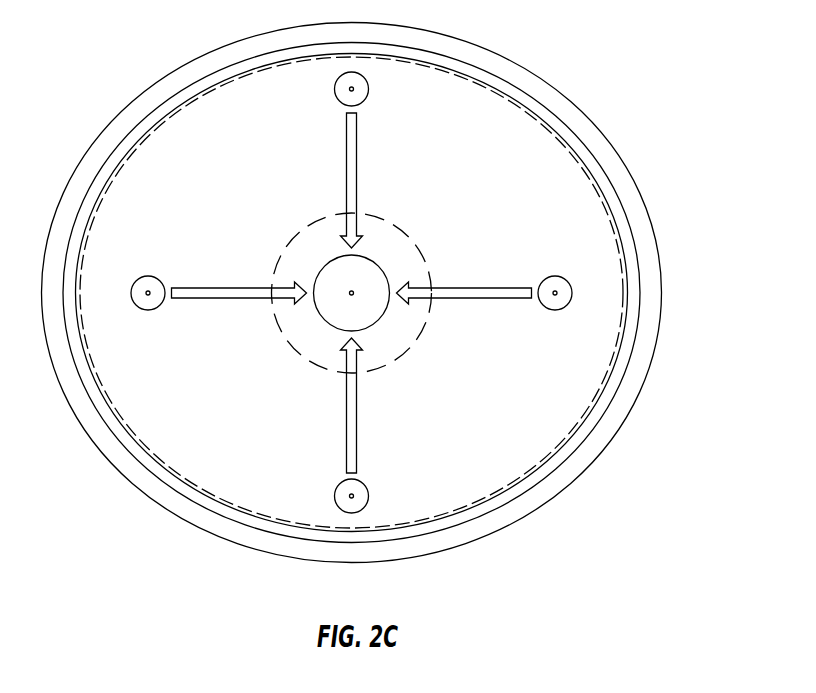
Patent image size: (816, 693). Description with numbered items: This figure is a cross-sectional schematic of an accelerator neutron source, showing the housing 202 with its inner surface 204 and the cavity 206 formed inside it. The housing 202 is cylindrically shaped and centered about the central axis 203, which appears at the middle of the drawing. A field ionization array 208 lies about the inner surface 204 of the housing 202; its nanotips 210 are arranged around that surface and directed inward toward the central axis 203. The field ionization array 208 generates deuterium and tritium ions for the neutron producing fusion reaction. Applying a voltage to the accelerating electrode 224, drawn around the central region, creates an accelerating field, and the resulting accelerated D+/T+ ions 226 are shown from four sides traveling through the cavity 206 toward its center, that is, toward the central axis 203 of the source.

The housing 202 is at (508, 515).
The inner surface 204 is at (550, 473).
The field ionization array 208 is at (587, 432).
The nanotips 210 is at (613, 380).
The cavity 206 is at (503, 413).
The central axis 203 is at (352, 290).
The accelerating electrode 224 is at (405, 232).
The accelerated D+/T+ ions 226 is at (362, 90).